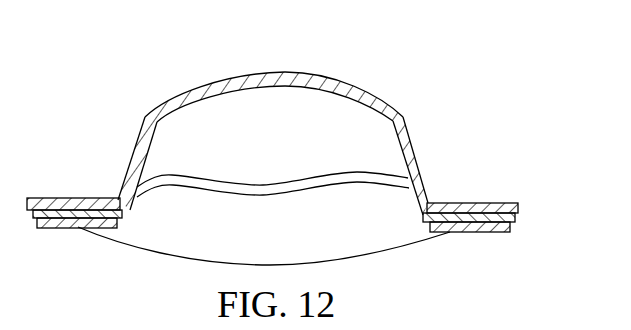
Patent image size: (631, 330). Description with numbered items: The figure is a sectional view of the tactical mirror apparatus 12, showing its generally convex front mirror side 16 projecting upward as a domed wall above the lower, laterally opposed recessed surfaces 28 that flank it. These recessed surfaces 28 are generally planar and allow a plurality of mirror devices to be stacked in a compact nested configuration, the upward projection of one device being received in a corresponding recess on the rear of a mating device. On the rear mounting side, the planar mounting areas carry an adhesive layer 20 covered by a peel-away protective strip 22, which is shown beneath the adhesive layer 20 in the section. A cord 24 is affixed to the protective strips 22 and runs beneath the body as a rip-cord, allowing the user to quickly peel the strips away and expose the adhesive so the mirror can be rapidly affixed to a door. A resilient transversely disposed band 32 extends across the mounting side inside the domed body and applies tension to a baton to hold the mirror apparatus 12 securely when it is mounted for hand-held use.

The mirror apparatus 12 is at (320, 120).
The mirror side 16 is at (333, 78).
The recessed surfaces 28 is at (465, 200).
The adhesive layer 20 is at (518, 218).
The protective strip 22 is at (510, 230).
The band 32 is at (252, 193).
The cord 24 is at (200, 265).